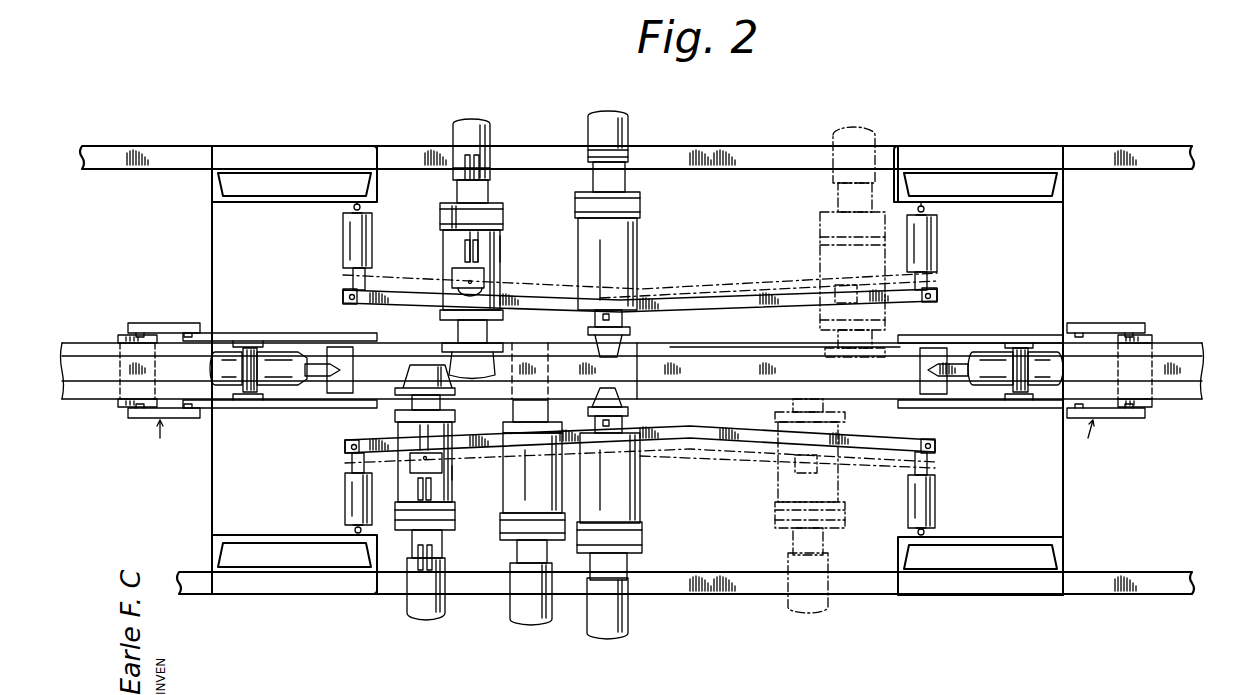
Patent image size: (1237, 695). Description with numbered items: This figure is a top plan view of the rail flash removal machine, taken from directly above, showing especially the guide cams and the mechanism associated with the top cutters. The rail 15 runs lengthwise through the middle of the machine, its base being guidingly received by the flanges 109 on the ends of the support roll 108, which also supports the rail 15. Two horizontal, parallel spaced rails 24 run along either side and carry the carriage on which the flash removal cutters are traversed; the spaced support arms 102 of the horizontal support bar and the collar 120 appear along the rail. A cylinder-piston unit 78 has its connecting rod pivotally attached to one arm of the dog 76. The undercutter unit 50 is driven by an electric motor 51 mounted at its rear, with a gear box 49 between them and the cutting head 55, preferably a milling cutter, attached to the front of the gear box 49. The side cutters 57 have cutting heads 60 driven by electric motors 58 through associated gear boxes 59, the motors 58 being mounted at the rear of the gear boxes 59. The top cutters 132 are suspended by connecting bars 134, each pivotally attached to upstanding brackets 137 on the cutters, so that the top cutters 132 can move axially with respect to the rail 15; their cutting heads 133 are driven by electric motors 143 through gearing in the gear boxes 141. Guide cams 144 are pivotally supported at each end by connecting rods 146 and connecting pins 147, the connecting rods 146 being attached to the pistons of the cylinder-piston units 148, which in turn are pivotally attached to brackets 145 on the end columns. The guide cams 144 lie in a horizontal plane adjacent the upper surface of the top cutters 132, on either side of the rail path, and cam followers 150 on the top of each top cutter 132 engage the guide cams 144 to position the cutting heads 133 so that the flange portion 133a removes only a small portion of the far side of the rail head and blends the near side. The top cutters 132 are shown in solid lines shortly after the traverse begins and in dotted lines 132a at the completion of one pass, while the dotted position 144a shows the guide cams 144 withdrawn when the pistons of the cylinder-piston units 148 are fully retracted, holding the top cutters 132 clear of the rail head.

The rail 15 is at (714, 379).
The parallel spaced rails 24 is at (745, 170).
The gear box 49 is at (503, 475).
The undercutter unit 50 is at (505, 514).
The electric motor 51 is at (515, 615).
The cutting head 55 is at (515, 343).
The side cutters 57 is at (647, 239).
The electric motors 58 is at (615, 112).
The gear box 59 is at (640, 275).
The cutting heads 60 is at (622, 340).
The dog 76 is at (337, 348).
The cylinder-piston unit 78 is at (222, 368).
The support arms 102 is at (272, 333).
The support roll 108 is at (637, 440).
The flanges 109 is at (163, 323).
The collar 120 is at (118, 333).
The top cutters 132 is at (435, 257).
The top cutters in dotted-line position 132a is at (848, 128).
The cutting heads 133 is at (407, 370).
The flange portion 133a is at (452, 345).
The connecting bars 134 is at (473, 155).
The upstanding brackets 137 is at (483, 180).
The gear boxes 141 is at (500, 240).
The electric motors 143 is at (470, 118).
The guide cams 144 is at (702, 290).
The guide cams in withdrawn position 144a is at (755, 288).
The brackets 145 is at (363, 209).
The connecting rods 146 is at (350, 280).
The connecting pins 147 is at (355, 300).
The cylinder-piston units 148 is at (348, 238).
The cam followers 150 is at (484, 278).